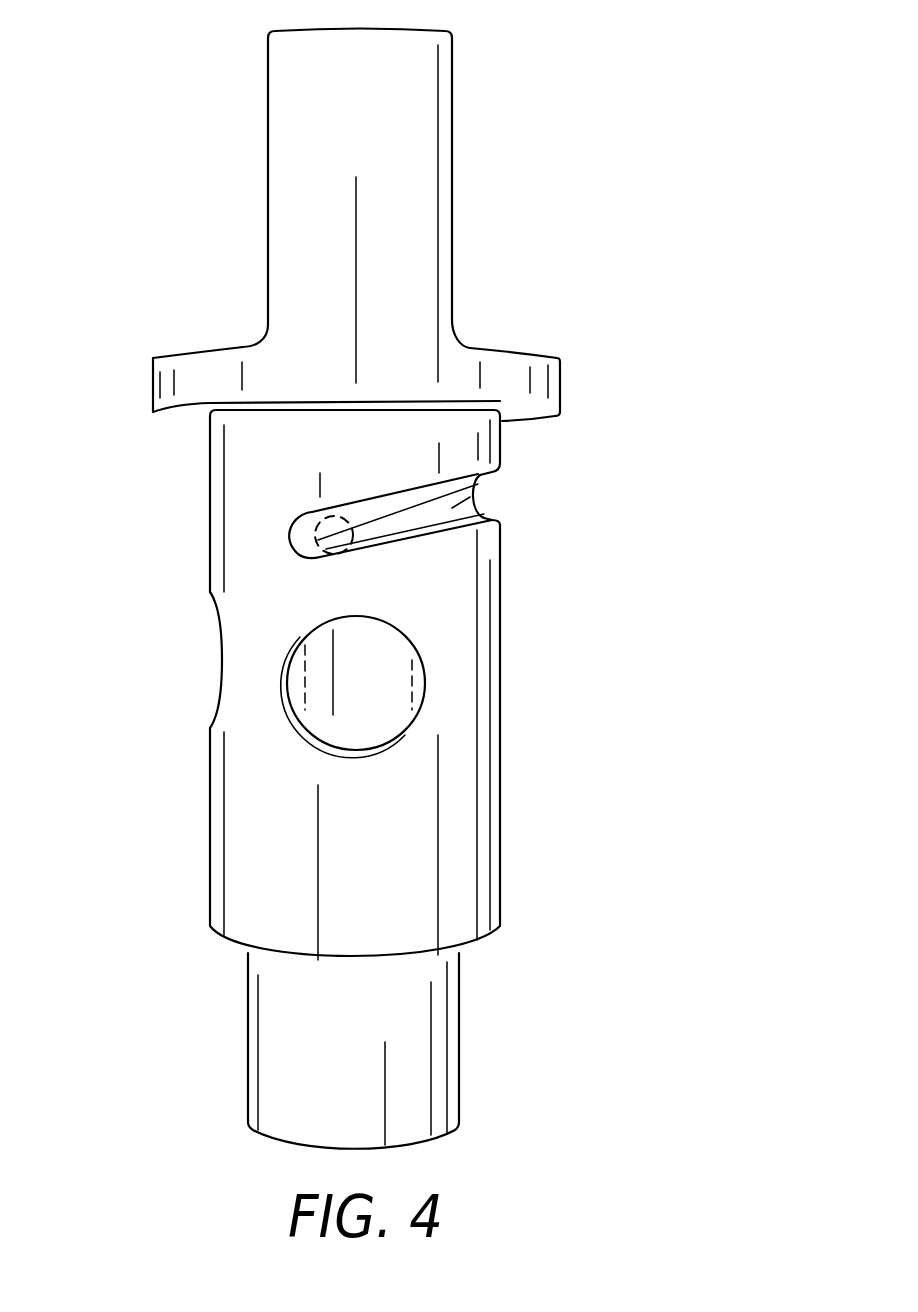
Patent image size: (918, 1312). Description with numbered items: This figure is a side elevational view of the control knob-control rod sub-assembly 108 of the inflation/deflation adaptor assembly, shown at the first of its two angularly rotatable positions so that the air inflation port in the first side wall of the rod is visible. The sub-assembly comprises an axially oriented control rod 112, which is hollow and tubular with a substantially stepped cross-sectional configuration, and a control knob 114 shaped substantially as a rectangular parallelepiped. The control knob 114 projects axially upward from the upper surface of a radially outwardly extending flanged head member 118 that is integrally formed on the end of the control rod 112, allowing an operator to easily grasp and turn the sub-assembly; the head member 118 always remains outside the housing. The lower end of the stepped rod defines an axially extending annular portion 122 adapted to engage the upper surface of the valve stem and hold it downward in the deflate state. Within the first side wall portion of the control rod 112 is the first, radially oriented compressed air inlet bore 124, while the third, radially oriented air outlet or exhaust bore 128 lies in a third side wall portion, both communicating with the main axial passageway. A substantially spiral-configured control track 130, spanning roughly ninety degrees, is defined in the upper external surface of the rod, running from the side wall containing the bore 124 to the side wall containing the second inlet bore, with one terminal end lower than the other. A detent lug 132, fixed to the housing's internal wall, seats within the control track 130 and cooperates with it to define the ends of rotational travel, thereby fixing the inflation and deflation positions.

The control knob-control rod sub-assembly 108 is at (232, 346).
The control rod 112 is at (460, 883).
The control knob 114 is at (415, 143).
The flanged head member 118 is at (525, 382).
The annular portion 122 is at (408, 1067).
The first radially oriented compressed air inlet bore 124 is at (392, 677).
The third radially oriented air outlet or exhaust bore 128 is at (220, 654).
The spiral-configured control track 130 is at (477, 490).
The detent lug 132 is at (318, 526).